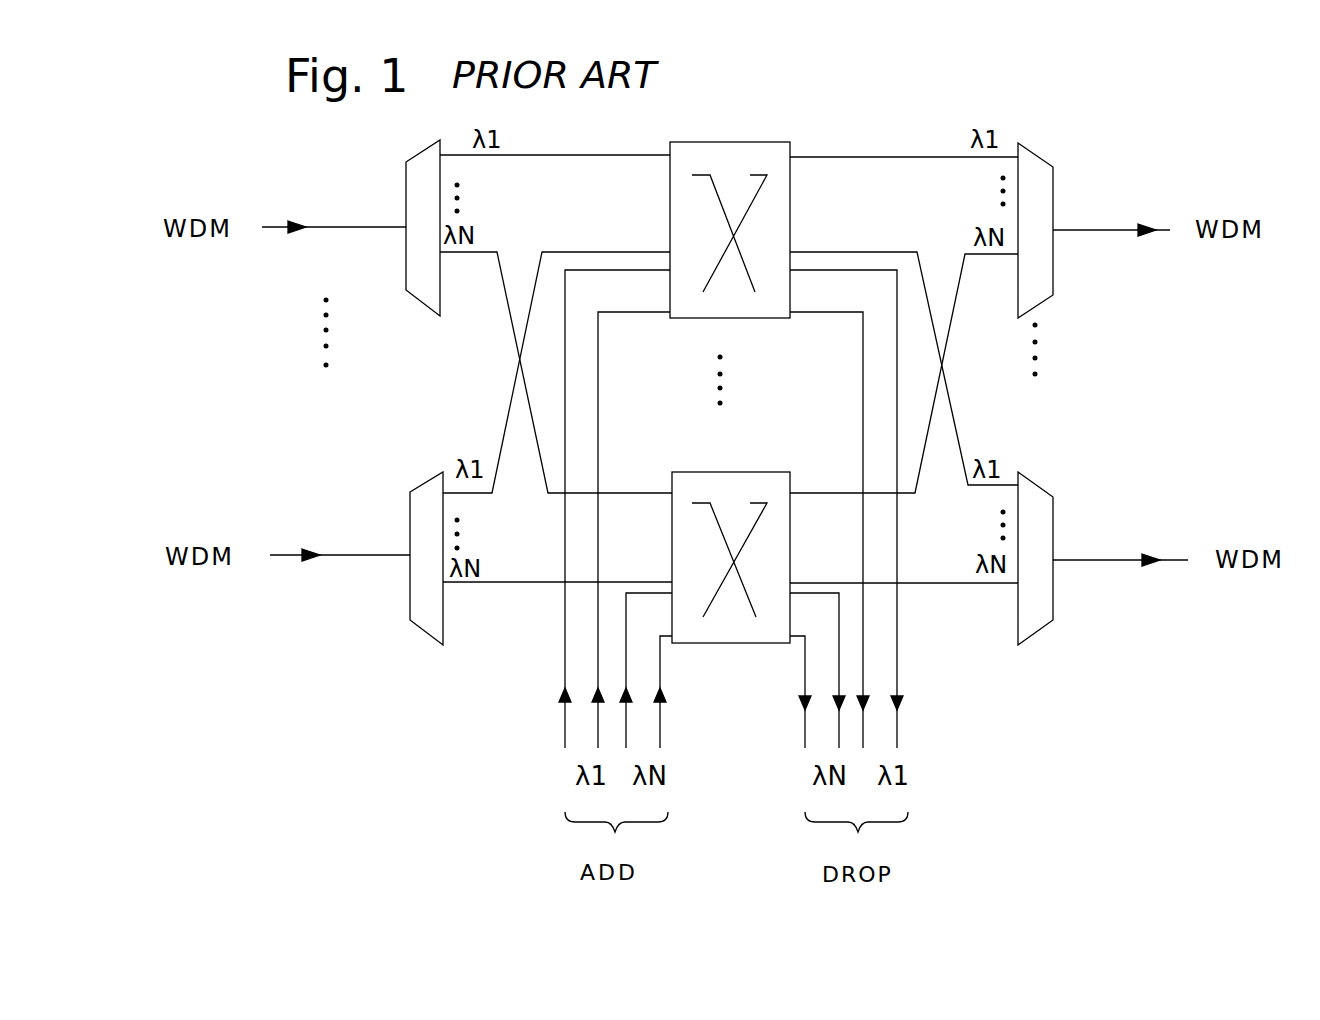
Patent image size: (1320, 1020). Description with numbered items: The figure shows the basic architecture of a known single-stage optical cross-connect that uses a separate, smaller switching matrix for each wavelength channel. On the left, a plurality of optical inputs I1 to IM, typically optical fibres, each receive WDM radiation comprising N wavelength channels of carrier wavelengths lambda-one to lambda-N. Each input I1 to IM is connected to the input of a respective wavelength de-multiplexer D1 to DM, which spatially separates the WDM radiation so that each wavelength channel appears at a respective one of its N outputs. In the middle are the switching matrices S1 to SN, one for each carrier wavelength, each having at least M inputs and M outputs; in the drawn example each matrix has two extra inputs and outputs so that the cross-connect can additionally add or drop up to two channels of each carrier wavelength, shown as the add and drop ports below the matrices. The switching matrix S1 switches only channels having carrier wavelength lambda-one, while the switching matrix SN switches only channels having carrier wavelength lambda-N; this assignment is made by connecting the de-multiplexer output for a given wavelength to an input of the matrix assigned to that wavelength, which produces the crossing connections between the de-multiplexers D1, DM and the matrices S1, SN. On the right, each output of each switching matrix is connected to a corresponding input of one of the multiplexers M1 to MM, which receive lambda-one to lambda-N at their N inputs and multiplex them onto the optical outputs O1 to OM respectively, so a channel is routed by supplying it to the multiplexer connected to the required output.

The wavelength de-multiplexer D1 is at (422, 170).
The wavelength de-multiplexer DM is at (425, 542).
The switching matrix S1 is at (690, 148).
The switching matrix SN is at (702, 478).
The multiplexer M1 is at (1036, 168).
The multiplexer MM is at (1028, 500).
The optical input I1 is at (378, 224).
The optical input IM is at (390, 556).
The optical output O1 is at (1111, 213).
The optical output OM is at (1084, 560).